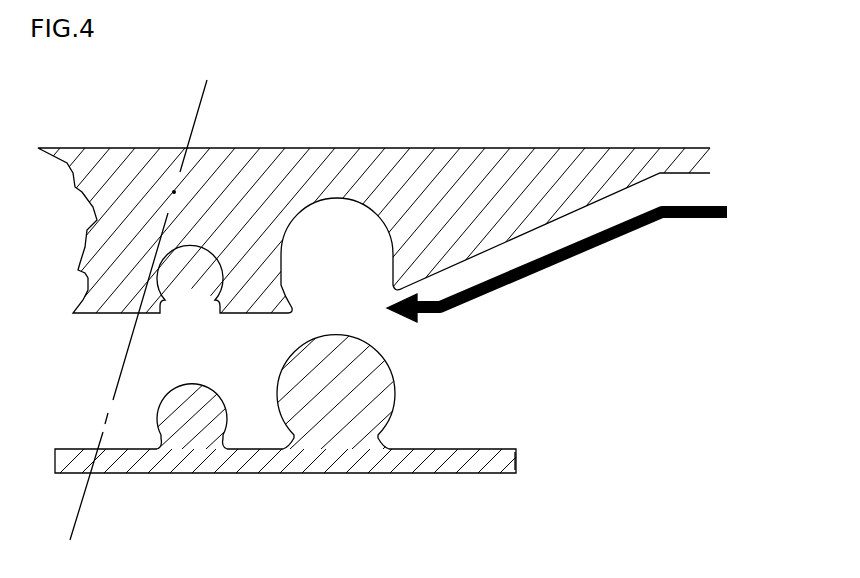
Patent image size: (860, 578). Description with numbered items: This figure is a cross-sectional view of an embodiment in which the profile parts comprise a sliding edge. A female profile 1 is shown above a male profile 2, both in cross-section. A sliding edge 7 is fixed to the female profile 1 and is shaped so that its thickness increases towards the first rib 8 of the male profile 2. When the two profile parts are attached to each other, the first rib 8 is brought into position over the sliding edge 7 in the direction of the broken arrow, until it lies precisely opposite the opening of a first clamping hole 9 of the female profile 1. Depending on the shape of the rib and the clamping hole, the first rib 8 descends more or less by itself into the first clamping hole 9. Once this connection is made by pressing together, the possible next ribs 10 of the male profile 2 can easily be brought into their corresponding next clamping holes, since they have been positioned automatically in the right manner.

The female profile 1 is at (488, 198).
The male profile 2 is at (445, 462).
The sliding edge 7 is at (538, 230).
The first rib 8 is at (393, 377).
The first clamping hole 9 is at (342, 255).
The next ribs 10 is at (197, 423).